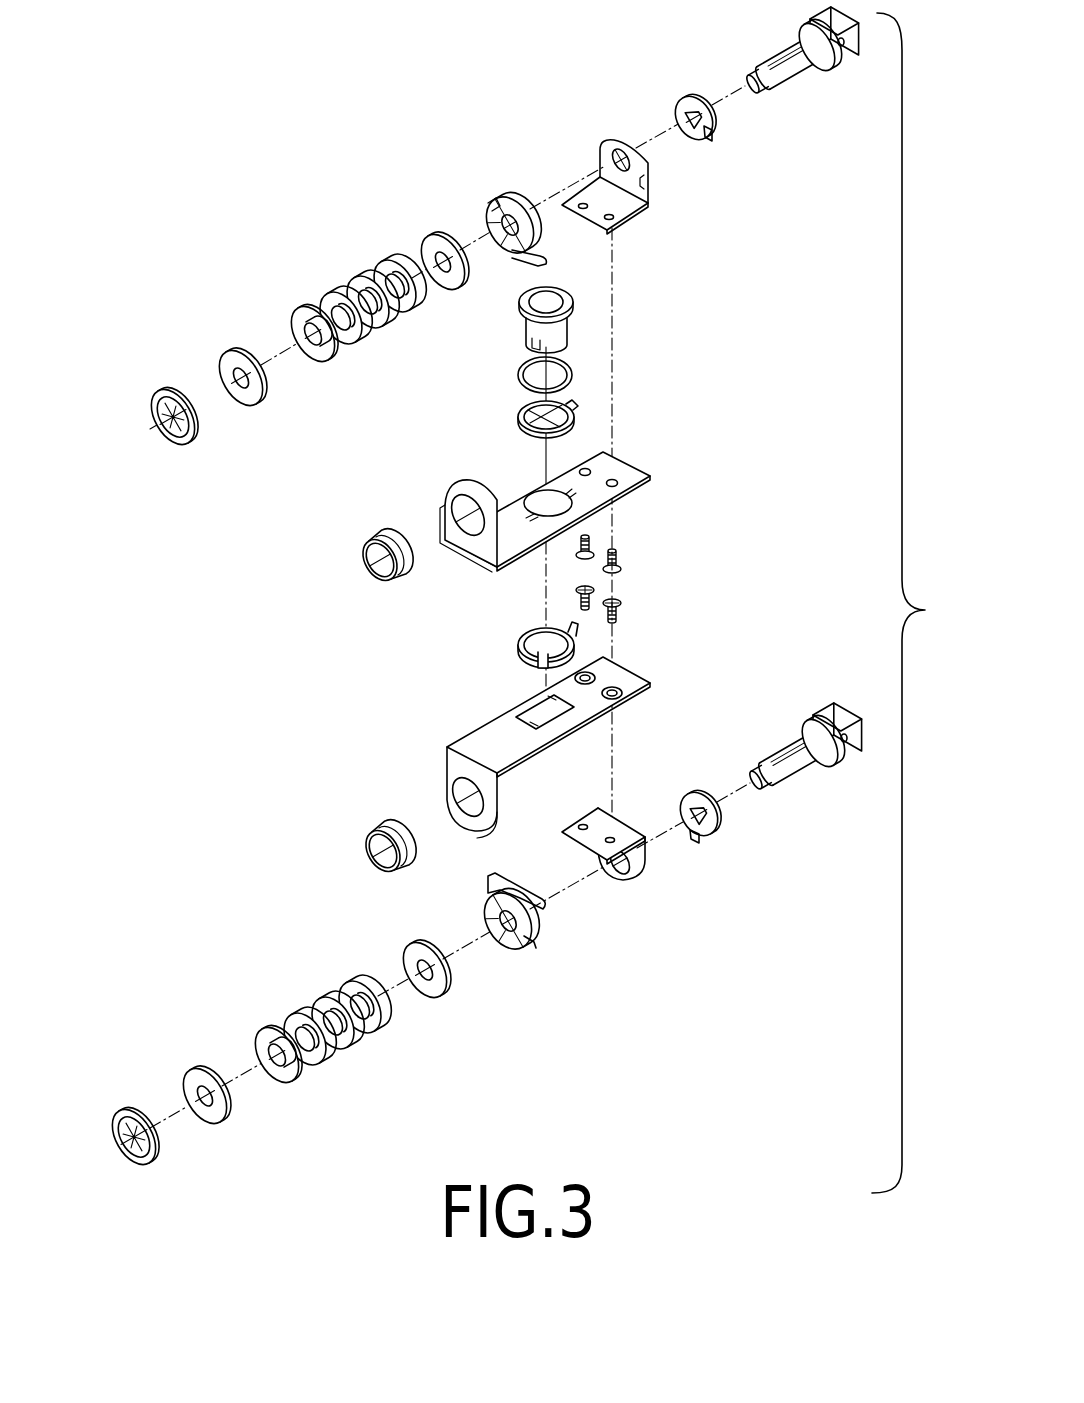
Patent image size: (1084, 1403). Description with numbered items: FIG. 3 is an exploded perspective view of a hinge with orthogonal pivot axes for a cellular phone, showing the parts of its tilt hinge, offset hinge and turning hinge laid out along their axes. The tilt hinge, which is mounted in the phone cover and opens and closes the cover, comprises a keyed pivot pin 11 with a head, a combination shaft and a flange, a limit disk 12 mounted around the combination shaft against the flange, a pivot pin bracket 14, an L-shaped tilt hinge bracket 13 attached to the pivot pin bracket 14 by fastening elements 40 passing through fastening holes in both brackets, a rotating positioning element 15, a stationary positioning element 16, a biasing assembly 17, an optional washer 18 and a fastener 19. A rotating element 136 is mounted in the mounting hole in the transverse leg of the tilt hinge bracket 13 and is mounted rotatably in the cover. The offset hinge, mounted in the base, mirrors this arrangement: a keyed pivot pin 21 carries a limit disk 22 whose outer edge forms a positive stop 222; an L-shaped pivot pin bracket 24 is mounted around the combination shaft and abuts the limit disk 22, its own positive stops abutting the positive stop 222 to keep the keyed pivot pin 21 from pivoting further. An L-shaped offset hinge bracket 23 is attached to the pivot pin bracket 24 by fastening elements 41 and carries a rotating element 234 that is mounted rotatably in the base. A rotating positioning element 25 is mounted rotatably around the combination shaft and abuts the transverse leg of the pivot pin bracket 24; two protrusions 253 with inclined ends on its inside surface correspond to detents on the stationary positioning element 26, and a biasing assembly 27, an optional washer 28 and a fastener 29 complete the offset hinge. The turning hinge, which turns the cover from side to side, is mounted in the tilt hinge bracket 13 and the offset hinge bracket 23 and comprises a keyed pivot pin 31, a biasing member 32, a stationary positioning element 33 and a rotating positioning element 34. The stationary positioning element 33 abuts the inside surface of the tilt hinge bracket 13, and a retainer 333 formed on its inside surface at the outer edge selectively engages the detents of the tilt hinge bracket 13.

The keyed pivot pin 11 is at (789, 43).
The limit disk 12 is at (688, 104).
The tilt hinge bracket 13 is at (630, 472).
The pivot pin bracket 14 is at (614, 146).
The rotating positioning element 15 is at (504, 205).
The stationary positioning element 16 is at (435, 248).
The biasing assembly 17 is at (376, 236).
The washer 18 is at (222, 360).
The fastener 19 is at (154, 398).
The keyed pivot pin 21 is at (799, 725).
The limit disk 22 is at (716, 824).
The positive stop 222 is at (700, 846).
The offset hinge bracket 23 is at (632, 688).
The rotating element 234 is at (379, 826).
The pivot pin bracket 24 is at (628, 880).
The rotating positioning element 25 is at (516, 954).
The protrusions 253 is at (530, 940).
The stationary positioning element 26 is at (442, 998).
The biasing assembly 27 is at (386, 1041).
The washer 28 is at (222, 1120).
The fastener 29 is at (150, 1167).
The keyed pivot pin 31 is at (570, 295).
The biasing member 32 is at (572, 372).
The stationary positioning element 33 is at (577, 412).
The retainer 333 is at (530, 442).
The rotating positioning element 34 is at (518, 646).
The fastening elements 40 is at (619, 562).
The fastening elements 41 is at (621, 617).
The rotating element 136 is at (376, 538).